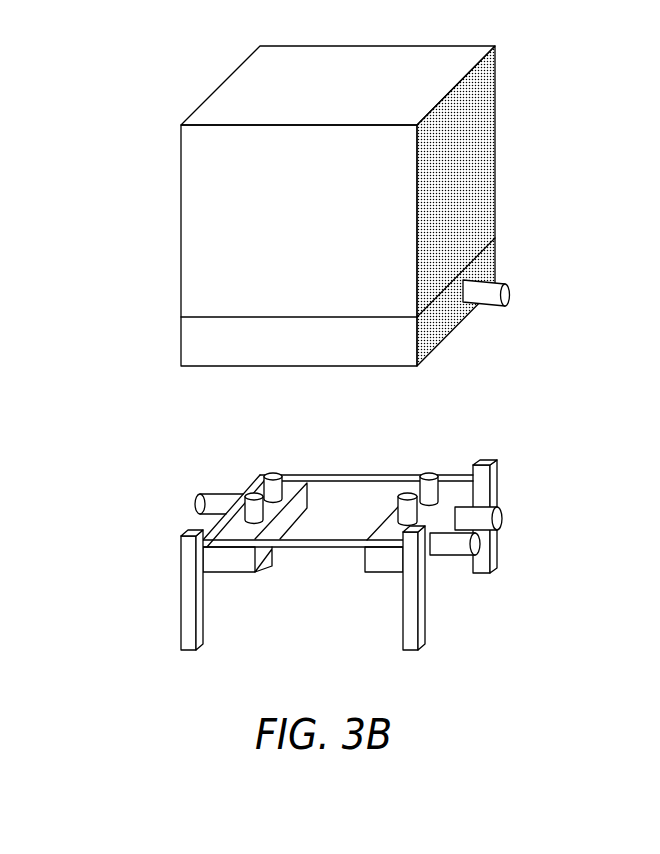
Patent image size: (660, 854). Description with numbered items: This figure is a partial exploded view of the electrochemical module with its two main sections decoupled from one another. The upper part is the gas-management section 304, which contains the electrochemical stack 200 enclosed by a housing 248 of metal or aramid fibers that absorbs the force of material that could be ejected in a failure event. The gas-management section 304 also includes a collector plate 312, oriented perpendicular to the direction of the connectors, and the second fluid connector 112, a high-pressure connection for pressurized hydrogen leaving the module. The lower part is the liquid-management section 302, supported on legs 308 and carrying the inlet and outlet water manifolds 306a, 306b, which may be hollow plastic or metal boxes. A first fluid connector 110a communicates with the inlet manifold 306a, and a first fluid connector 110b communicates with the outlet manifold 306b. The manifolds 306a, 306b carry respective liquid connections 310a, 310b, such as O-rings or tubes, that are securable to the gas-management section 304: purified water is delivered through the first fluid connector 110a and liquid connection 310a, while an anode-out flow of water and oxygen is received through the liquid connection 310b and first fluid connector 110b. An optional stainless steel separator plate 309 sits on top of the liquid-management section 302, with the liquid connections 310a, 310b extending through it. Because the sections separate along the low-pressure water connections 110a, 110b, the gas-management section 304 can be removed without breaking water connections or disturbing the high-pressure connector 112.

The electrochemical stack 200 is at (353, 222).
The gas-management section 304 is at (364, 222).
The housing 248 is at (181, 243).
The collector plate 312 is at (181, 316).
The second fluid connector 112 is at (504, 339).
The liquid-management section 302 is at (356, 532).
The legs 308 is at (182, 585).
The separator plate 309 is at (363, 476).
The inlet water manifold 306a is at (240, 560).
The outlet water manifold 306b is at (388, 565).
The liquid connection 310a is at (283, 473).
The liquid connection 310b is at (432, 470).
The first fluid connector 110a is at (194, 503).
The first fluid connector 110b is at (453, 542).